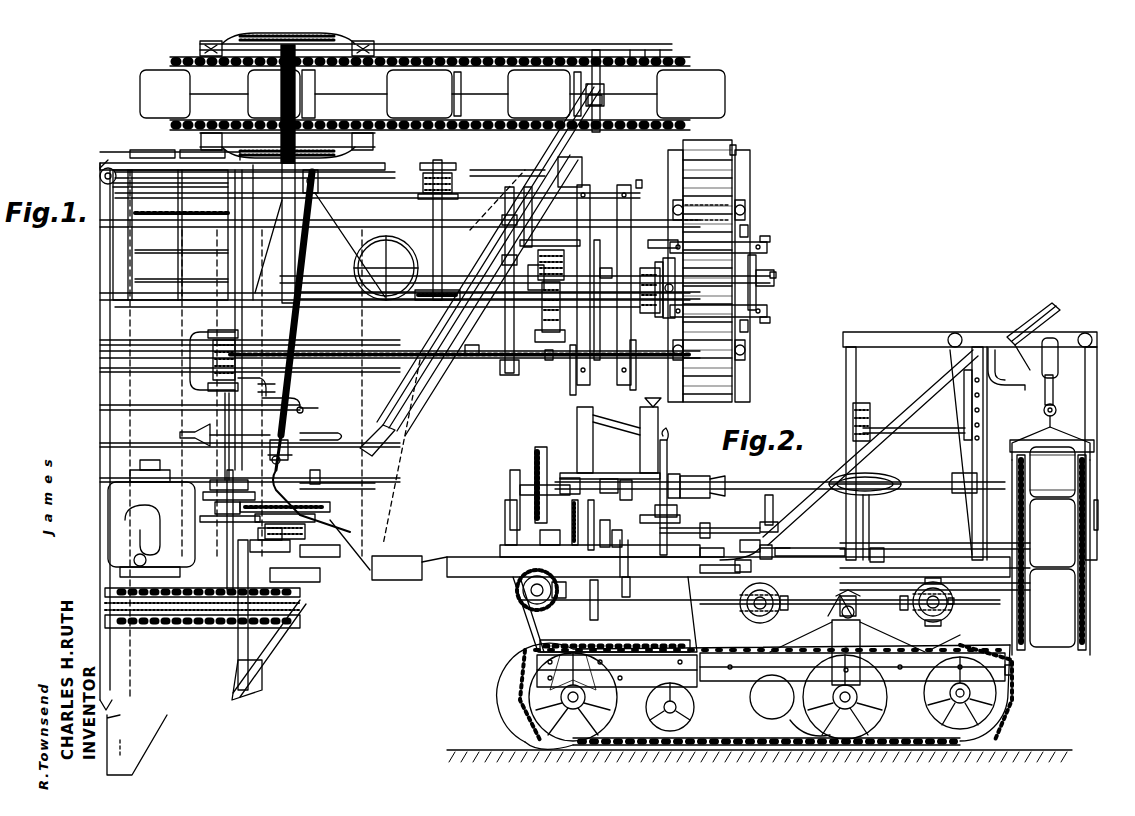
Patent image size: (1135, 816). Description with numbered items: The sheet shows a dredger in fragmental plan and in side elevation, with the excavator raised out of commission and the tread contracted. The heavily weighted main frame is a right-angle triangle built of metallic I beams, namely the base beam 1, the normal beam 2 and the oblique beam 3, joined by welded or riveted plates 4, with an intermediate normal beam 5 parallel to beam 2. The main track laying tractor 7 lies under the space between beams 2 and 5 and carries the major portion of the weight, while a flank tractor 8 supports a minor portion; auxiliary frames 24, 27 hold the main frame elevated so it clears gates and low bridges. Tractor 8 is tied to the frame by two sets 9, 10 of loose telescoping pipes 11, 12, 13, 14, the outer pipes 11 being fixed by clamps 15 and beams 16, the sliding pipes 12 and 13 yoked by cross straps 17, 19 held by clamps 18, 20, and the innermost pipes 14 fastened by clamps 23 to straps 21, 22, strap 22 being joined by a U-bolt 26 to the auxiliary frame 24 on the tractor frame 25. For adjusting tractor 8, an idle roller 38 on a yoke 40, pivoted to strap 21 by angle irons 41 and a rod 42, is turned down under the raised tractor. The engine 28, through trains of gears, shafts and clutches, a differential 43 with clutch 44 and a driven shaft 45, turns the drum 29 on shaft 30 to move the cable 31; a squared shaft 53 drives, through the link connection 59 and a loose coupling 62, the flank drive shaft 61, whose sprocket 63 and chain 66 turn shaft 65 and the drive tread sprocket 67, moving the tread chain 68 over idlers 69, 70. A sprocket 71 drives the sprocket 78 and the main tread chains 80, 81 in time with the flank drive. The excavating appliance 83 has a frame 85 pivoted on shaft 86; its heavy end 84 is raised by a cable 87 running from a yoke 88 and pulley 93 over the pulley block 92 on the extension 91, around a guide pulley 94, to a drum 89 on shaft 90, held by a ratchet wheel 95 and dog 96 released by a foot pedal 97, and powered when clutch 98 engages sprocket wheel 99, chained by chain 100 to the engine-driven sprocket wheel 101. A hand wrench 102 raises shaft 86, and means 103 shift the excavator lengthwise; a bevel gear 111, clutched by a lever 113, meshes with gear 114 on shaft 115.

In FIG. 1, the base beam 1 is at (478, 170).
In FIG. 2, the base beam 1 is at (911, 322).
In FIG. 1, the normal beam 2 is at (112, 658).
In FIG. 1, the oblique beam 3 is at (276, 642).
In FIG. 2, the oblique beam 3 is at (444, 582).
In FIG. 1, the plates 4 is at (100, 158).
In FIG. 1, the intermediate normal beam 5 is at (228, 552).
In FIG. 2, the intermediate normal beam 5 is at (1106, 517).
In FIG. 1, the main track laying tractor 7 is at (828, 273).
In FIG. 2, the main track laying tractor 7 is at (505, 700).
In FIG. 1, the flank tractor 8 is at (747, 146).
In FIG. 2, the flank tractor 8 is at (1015, 677).
In FIG. 1, the set of telescoping pipes 9 is at (643, 174).
In FIG. 2, the set of telescoping pipes 9 is at (982, 619).
In FIG. 1, the set of telescoping pipes 10 is at (555, 380).
In FIG. 2, the set of telescoping pipes 10 is at (716, 611).
In FIG. 1, the pipes 11 is at (465, 380).
In FIG. 1, the pipes 12 is at (568, 302).
In FIG. 1, the pipes 13 is at (600, 253).
In FIG. 1, the pipes 14 is at (649, 210).
In FIG. 2, the pipes 14 is at (942, 603).
In FIG. 1, the clamps 15 is at (510, 374).
In FIG. 1, the beams 16 is at (504, 312).
In FIG. 1, the cross strap 17 is at (596, 309).
In FIG. 1, the clamps 18 is at (595, 190).
In FIG. 1, the cross strap 19 is at (602, 264).
In FIG. 1, the clamps 20 is at (626, 291).
In FIG. 1, the strap 21 is at (748, 228).
In FIG. 2, the strap 21 is at (844, 616).
In FIG. 1, the strap 22 is at (668, 238).
In FIG. 1, the clamps 23 is at (678, 200).
In FIG. 2, the clamps 23 is at (944, 614).
In FIG. 2, the auxiliary frame 24 is at (852, 682).
In FIG. 1, the tractor frame 25 is at (671, 160).
In FIG. 2, the tractor frame 25 is at (692, 667).
In FIG. 2, the U-bolt 26 is at (854, 601).
In FIG. 2, the auxiliary frame 27 is at (682, 607).
In FIG. 1, the engine 28 is at (121, 517).
In FIG. 2, the engine 28 is at (606, 438).
In FIG. 1, the drum 29 is at (552, 307).
In FIG. 1, the shaft 30 is at (550, 332).
In FIG. 1, the cable 31 is at (483, 308).
In FIG. 1, the idle roller 38 is at (772, 271).
In FIG. 2, the idle roller 38 is at (883, 561).
In FIG. 1, the yoke 40 is at (767, 240).
In FIG. 2, the yoke 40 is at (810, 561).
In FIG. 1, the angle irons 41 is at (770, 237).
In FIG. 1, the rod 42 is at (765, 255).
In FIG. 2, the rod 42 is at (773, 559).
In FIG. 1, the differential 43 is at (356, 536).
In FIG. 2, the differential 43 is at (597, 523).
In FIG. 1, the clutch 44 is at (336, 484).
In FIG. 2, the clutch 44 is at (693, 546).
In FIG. 1, the driven shaft 45 is at (320, 474).
In FIG. 1, the squared shaft 53 is at (550, 270).
In FIG. 1, the link connection 59 is at (570, 274).
In FIG. 2, the flank drive shaft 61 is at (840, 604).
In FIG. 1, the loose coupling 62 is at (643, 274).
In FIG. 1, the sprocket 63 is at (645, 283).
In FIG. 2, the shaft 65 is at (847, 652).
In FIG. 1, the chain 66 is at (655, 286).
In FIG. 2, the chain 66 is at (833, 618).
In FIG. 2, the drive tread sprocket 67 is at (810, 728).
In FIG. 1, the tread chain 68 is at (716, 152).
In FIG. 2, the tread chain 68 is at (982, 655).
In FIG. 2, the idler 69 is at (772, 703).
In FIG. 2, the idler 70 is at (940, 724).
In FIG. 1, the sprocket 71 is at (466, 200).
In FIG. 2, the sprocket 78 is at (580, 697).
In FIG. 1, the tread chain 80 is at (170, 235).
In FIG. 2, the tread chain 80 is at (515, 732).
In FIG. 1, the tread chain 81 is at (130, 156).
In FIG. 1, the excavating appliance 83 is at (157, 52).
In FIG. 2, the excavating appliance 83 is at (1105, 477).
In FIG. 1, the heavy end 84 is at (683, 48).
In FIG. 2, the heavy end 84 is at (1105, 578).
In FIG. 1, the excavator frame 85 is at (525, 45).
In FIG. 2, the excavator frame 85 is at (1090, 552).
In FIG. 1, the shaft 86 is at (293, 313).
In FIG. 2, the shaft 86 is at (738, 489).
In FIG. 1, the cable 87 is at (358, 332).
In FIG. 2, the cable 87 is at (1030, 350).
In FIG. 1, the yoke 88 is at (600, 73).
In FIG. 2, the yoke 88 is at (1056, 428).
In FIG. 1, the drum 89 is at (235, 340).
In FIG. 2, the drum 89 is at (846, 500).
In FIG. 1, the shaft 90 is at (224, 424).
In FIG. 2, the shaft 90 is at (730, 531).
In FIG. 1, the extension 91 is at (603, 103).
In FIG. 2, the extension 91 is at (1016, 315).
In FIG. 1, the pulley block 92 is at (604, 89).
In FIG. 2, the pulley block 92 is at (1052, 338).
In FIG. 2, the pulley 93 is at (1044, 410).
In FIG. 2, the guide pulley 94 is at (740, 600).
In FIG. 2, the ratchet wheel 95 is at (768, 510).
In FIG. 1, the dog 96 is at (264, 379).
In FIG. 2, the dog 96 is at (747, 545).
In FIG. 1, the foot pedal 97 is at (304, 405).
In FIG. 2, the foot pedal 97 is at (740, 562).
In FIG. 1, the clutch 98 is at (325, 431).
In FIG. 2, the clutch 98 is at (664, 523).
In FIG. 1, the sprocket wheel 99 is at (192, 386).
In FIG. 2, the sprocket wheel 99 is at (636, 479).
In FIG. 1, the chain 100 is at (240, 516).
In FIG. 2, the chain 100 is at (657, 477).
In FIG. 1, the sprocket wheel 101 is at (285, 519).
In FIG. 2, the sprocket wheel 101 is at (632, 586).
In FIG. 1, the hand wrench 102 is at (425, 248).
In FIG. 2, the hand wrench 102 is at (962, 380).
In FIG. 1, the shifting means 103 is at (442, 230).
In FIG. 2, the idle bevel gear 111 is at (539, 604).
In FIG. 2, the lever 113 is at (537, 522).
In FIG. 2, the gear 114 is at (559, 596).
In FIG. 2, the shaft 115 is at (597, 601).